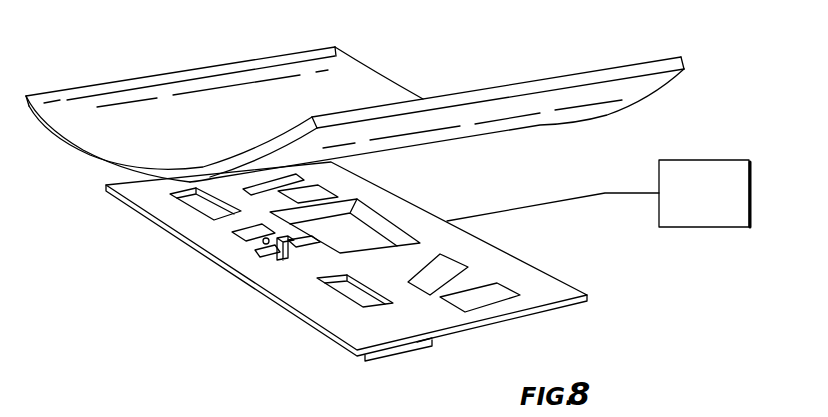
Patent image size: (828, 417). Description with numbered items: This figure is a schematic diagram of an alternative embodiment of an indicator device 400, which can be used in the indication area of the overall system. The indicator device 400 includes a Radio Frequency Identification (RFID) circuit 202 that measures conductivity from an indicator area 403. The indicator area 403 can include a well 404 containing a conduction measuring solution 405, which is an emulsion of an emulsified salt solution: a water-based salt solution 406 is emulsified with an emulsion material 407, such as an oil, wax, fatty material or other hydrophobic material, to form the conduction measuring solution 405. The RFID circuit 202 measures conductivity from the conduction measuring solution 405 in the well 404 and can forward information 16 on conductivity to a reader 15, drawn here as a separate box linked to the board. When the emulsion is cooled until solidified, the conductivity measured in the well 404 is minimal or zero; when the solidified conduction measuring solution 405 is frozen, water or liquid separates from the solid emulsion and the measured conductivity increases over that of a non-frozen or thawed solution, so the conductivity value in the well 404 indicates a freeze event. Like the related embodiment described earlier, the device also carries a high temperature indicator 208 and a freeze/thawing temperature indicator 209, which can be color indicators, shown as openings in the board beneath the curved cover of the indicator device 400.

The indicator device 400 is at (239, 38).
The information 16 is at (392, 225).
The reader 15 is at (695, 160).
The Radio Frequency Identification (RFID) circuit 202 is at (457, 258).
The high temperature indicator 208 is at (180, 198).
The freeze/thawing temperature indicator 209 is at (345, 298).
The indicator area 403 is at (245, 236).
The well 404 is at (262, 251).
The conduction measuring solution 405 is at (284, 260).
The water-based salt solution 406 is at (272, 246).
The emulsion material 407 is at (264, 244).